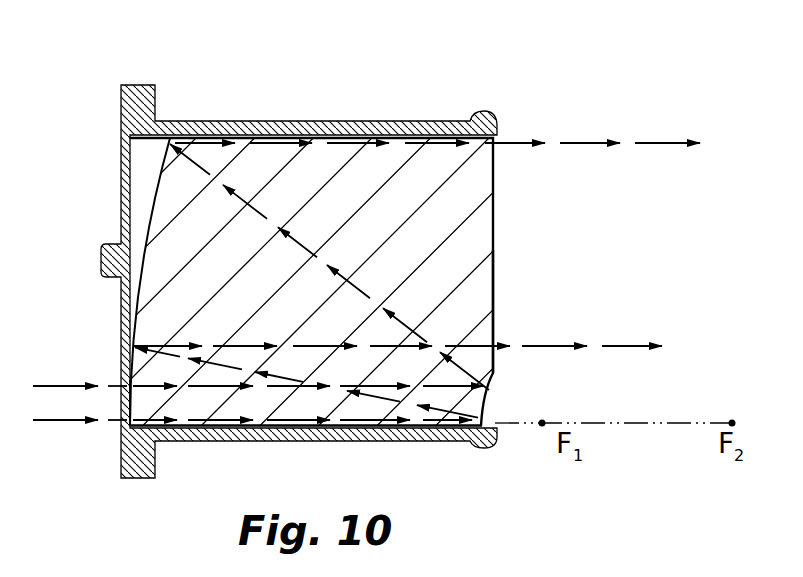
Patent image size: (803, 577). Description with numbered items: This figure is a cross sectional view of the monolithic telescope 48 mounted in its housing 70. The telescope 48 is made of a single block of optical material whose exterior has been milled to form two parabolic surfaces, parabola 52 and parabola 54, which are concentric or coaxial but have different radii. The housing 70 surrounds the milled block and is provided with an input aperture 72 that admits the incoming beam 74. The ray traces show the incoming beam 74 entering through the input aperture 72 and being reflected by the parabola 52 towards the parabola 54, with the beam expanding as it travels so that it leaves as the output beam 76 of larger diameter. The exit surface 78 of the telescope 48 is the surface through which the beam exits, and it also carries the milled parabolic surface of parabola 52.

The monolithic telescope 48 is at (361, 261).
The parabola 52 is at (473, 238).
The parabola 54 is at (140, 217).
The housing 70 is at (322, 119).
The input aperture 72 is at (127, 417).
The incoming beam 74 is at (43, 386).
The output beam 76 is at (700, 226).
The exit surface 78 is at (497, 293).